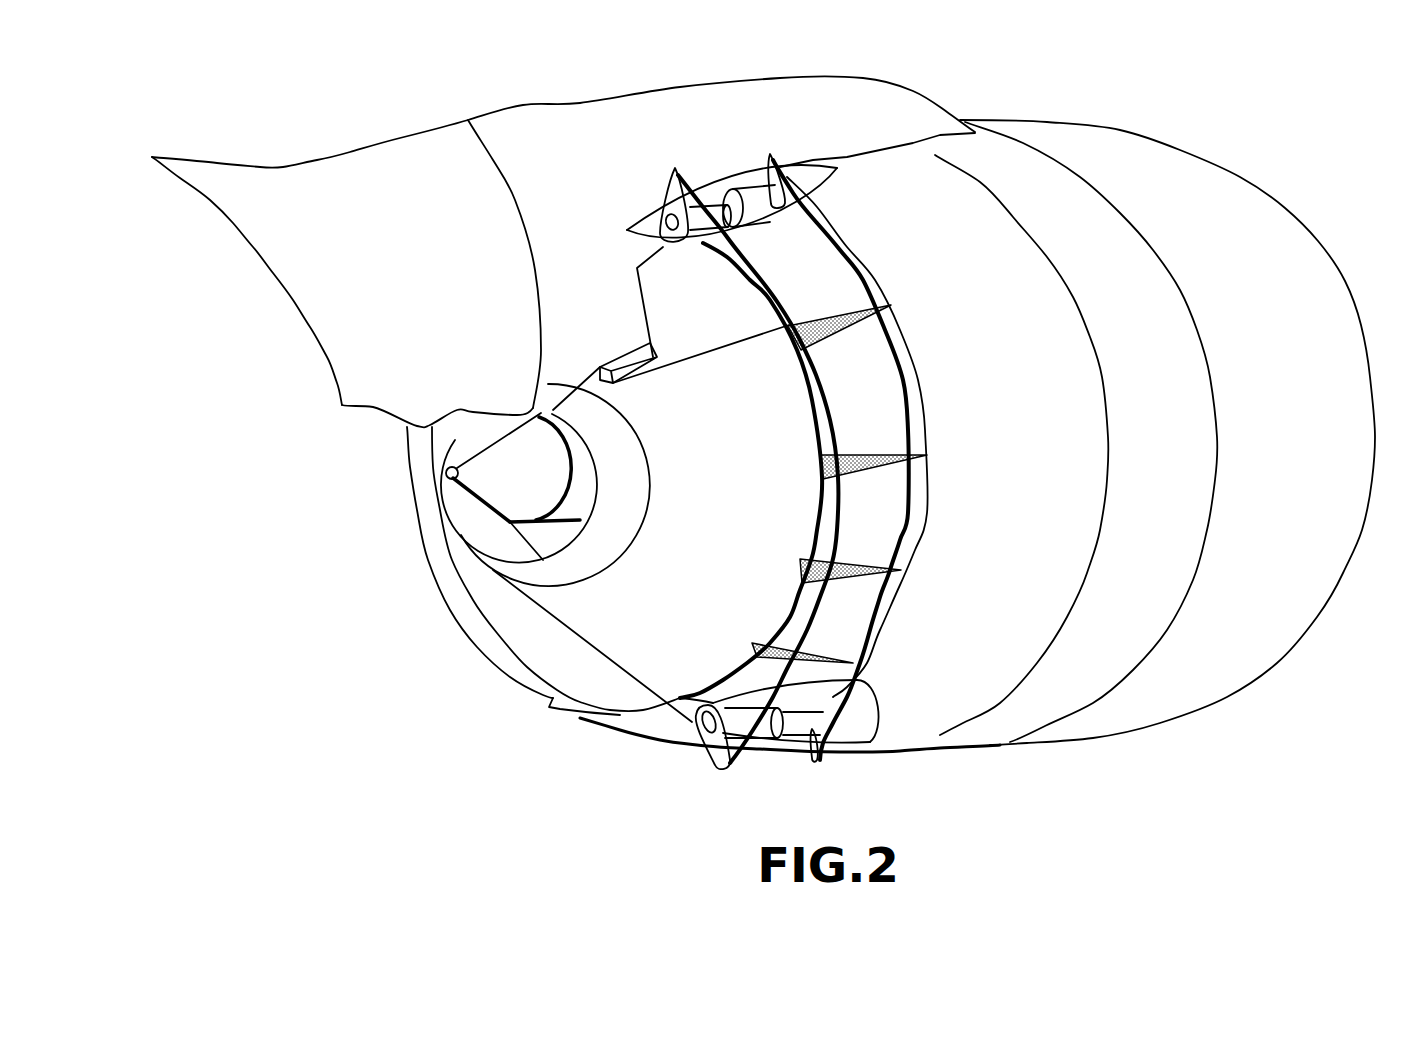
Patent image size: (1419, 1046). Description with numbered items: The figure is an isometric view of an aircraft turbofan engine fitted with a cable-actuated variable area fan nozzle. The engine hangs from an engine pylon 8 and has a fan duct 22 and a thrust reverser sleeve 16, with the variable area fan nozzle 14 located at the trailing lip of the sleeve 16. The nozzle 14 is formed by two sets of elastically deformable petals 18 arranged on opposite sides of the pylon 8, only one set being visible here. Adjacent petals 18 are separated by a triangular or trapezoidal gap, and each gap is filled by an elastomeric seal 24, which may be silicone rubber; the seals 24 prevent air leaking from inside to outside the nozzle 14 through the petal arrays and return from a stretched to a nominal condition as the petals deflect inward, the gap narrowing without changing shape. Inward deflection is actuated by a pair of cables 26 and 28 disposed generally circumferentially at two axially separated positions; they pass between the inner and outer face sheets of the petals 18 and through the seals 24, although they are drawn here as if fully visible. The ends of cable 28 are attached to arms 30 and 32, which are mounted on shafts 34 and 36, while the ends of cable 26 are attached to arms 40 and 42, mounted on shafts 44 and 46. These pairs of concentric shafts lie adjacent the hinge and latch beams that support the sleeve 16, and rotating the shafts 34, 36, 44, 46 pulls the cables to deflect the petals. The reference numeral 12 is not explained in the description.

The engine pylon 8 is at (812, 90).
The nacelle inlet 12 is at (553, 622).
The variable area fan nozzle 14 is at (832, 461).
The thrust reverser sleeve 16 is at (950, 700).
The petals 18 is at (853, 498).
The fan duct 22 is at (1010, 158).
The elastomeric seal 24 is at (790, 343).
The cable 26 is at (773, 687).
The cable 28 is at (880, 603).
The arm 30 is at (771, 167).
The arm 32 is at (810, 757).
The shaft 34 is at (753, 197).
The shaft 36 is at (823, 730).
The arm 40 is at (667, 193).
The arm 42 is at (713, 757).
The shaft 44 is at (723, 212).
The shaft 46 is at (767, 738).